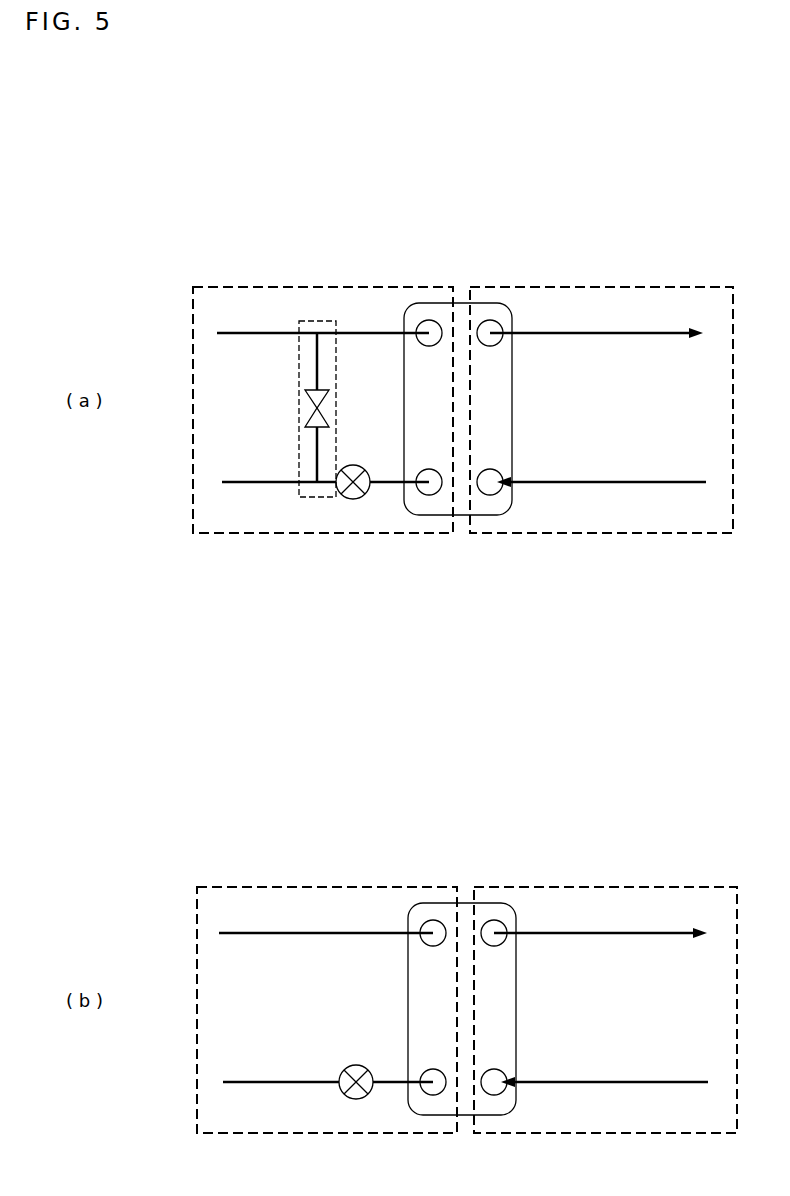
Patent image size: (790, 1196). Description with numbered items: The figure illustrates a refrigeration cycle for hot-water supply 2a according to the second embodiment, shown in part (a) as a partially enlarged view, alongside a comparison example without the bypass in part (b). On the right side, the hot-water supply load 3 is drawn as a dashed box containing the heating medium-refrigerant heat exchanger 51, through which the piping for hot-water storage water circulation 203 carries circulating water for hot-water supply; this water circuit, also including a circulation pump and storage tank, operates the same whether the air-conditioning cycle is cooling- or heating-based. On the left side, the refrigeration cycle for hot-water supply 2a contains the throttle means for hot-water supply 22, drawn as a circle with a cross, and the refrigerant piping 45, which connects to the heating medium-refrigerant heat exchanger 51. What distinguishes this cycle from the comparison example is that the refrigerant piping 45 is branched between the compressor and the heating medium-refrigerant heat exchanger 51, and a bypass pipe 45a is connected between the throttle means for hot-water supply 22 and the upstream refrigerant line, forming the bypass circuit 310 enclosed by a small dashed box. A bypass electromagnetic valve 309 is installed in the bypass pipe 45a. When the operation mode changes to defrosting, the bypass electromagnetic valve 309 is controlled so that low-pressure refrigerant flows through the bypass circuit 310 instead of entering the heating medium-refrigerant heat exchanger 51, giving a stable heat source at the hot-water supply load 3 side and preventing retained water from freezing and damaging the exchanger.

The refrigeration cycle for hot-water supply 2a is at (353, 287).
The hot-water supply load 3 is at (583, 287).
The refrigerant piping 45 is at (388, 333).
The bypass pipe 45a is at (317, 352).
The heating medium-refrigerant heat exchanger 51 is at (489, 303).
The piping for hot-water storage water circulation 203 is at (633, 333).
The throttle means for hot-water supply 22 is at (353, 466).
The bypass electromagnetic valve 309 is at (312, 398).
The bypass circuit 310 is at (299, 445).